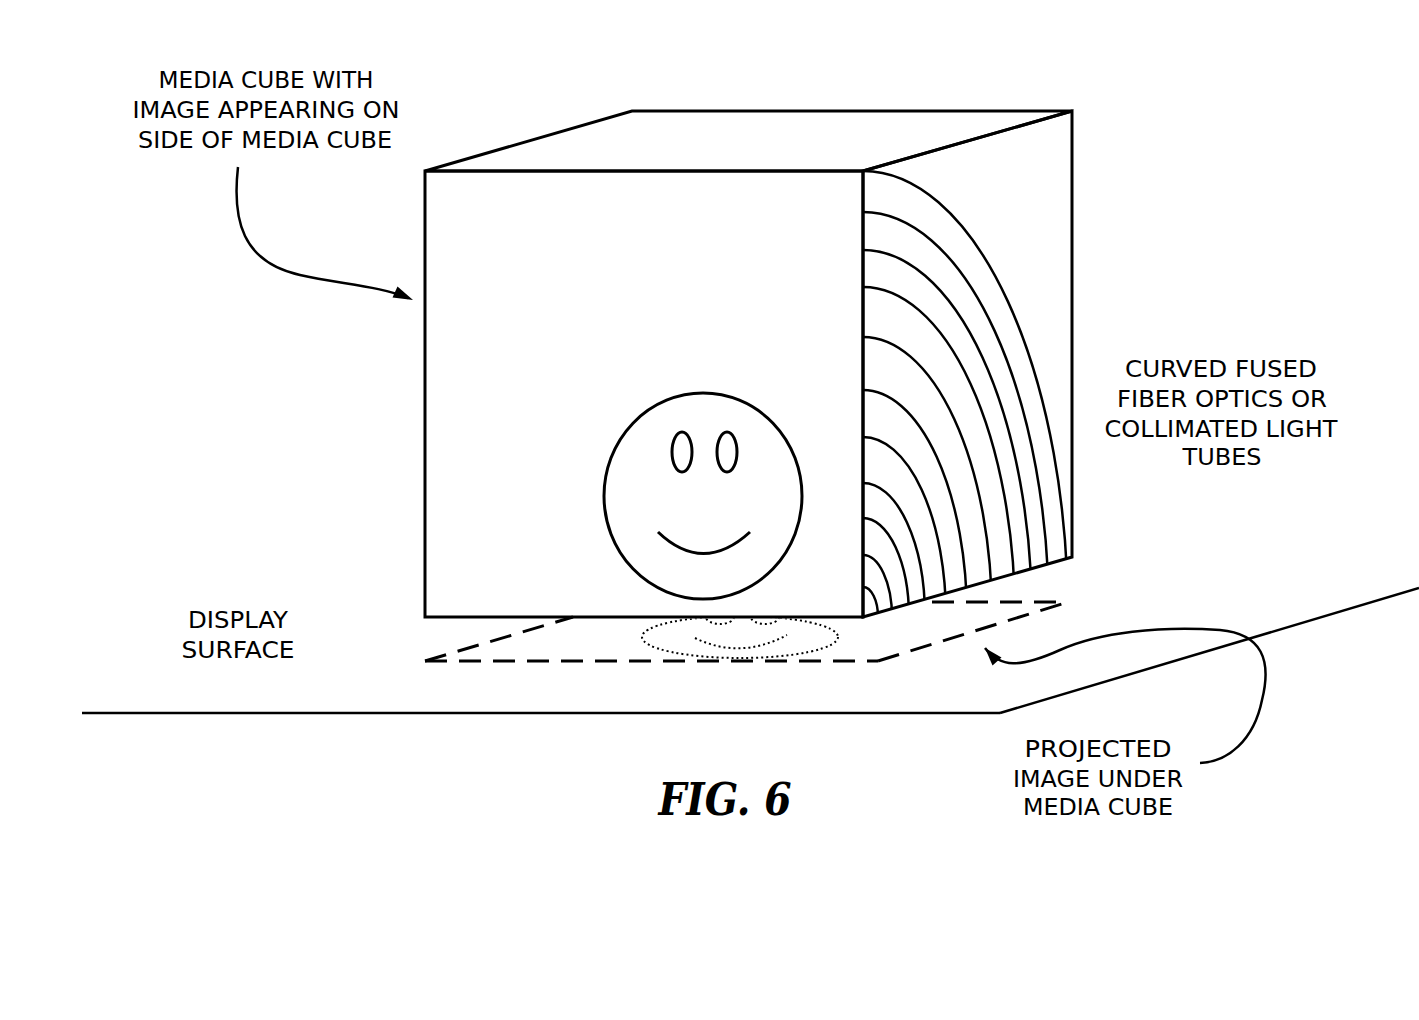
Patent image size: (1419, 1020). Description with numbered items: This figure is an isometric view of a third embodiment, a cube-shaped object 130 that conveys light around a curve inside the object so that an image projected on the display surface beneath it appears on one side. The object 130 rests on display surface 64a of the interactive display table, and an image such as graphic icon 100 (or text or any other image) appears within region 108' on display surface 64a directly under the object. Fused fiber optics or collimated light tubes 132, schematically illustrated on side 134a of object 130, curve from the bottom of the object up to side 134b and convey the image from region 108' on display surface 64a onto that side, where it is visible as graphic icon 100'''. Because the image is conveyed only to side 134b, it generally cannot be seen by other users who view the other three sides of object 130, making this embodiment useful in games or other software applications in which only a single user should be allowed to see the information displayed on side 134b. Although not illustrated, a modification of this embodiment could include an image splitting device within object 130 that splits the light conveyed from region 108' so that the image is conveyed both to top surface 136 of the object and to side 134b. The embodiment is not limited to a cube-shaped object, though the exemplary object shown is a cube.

The object 130 is at (390, 543).
The side of object 134b is at (467, 361).
The top surface of object 136 is at (903, 117).
The side of object 134a is at (1060, 292).
The fused fiber optics or collimated light tubes 132 is at (1065, 508).
The graphic icon 100''' is at (574, 496).
The region on display surface 108' is at (822, 602).
The graphic icon 100 is at (720, 655).
The display surface 64a is at (503, 707).